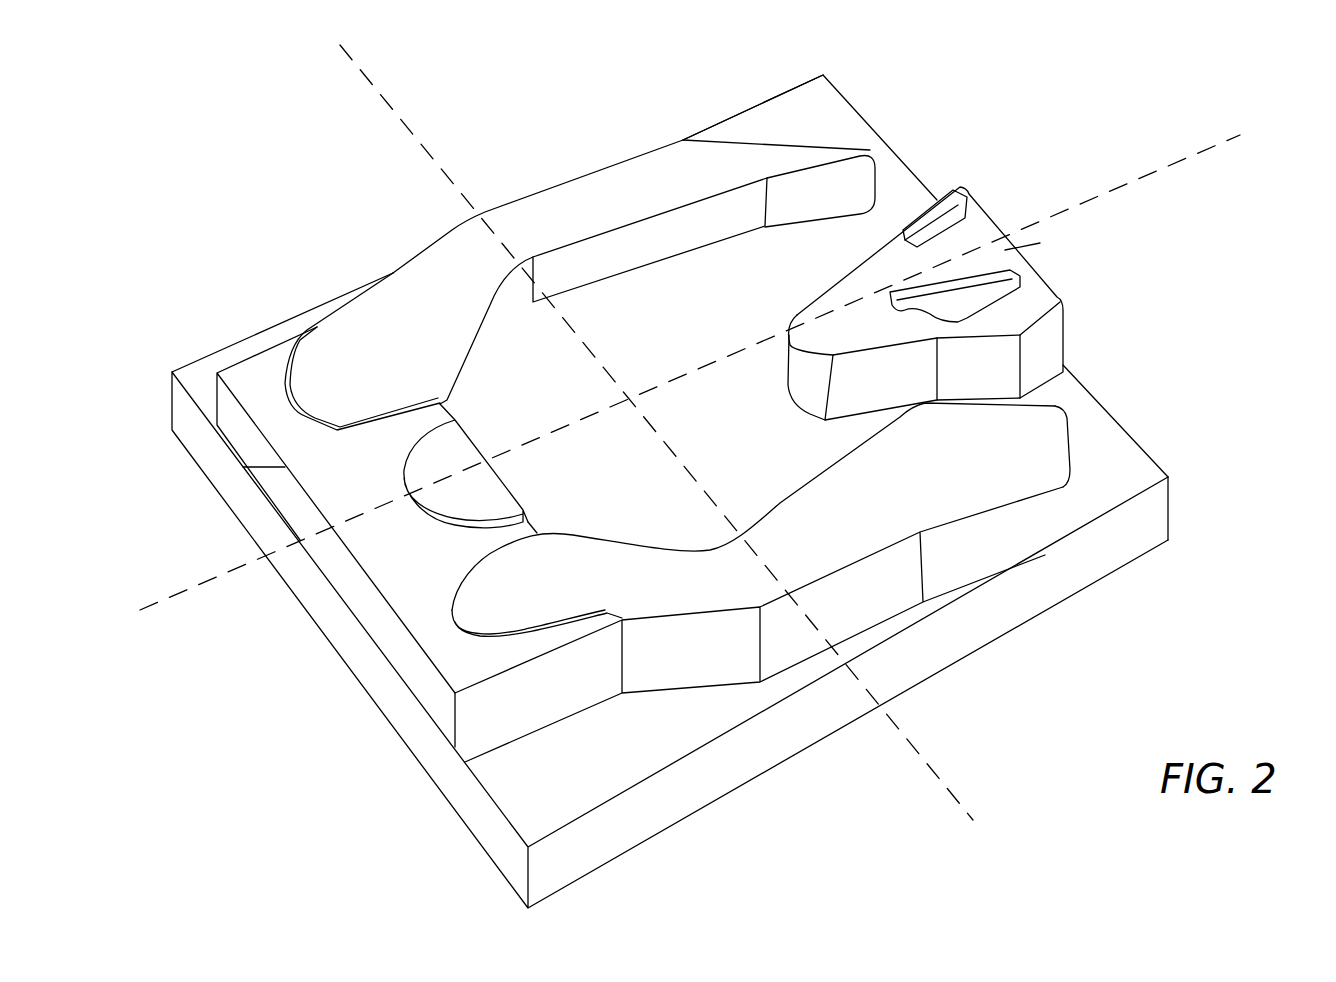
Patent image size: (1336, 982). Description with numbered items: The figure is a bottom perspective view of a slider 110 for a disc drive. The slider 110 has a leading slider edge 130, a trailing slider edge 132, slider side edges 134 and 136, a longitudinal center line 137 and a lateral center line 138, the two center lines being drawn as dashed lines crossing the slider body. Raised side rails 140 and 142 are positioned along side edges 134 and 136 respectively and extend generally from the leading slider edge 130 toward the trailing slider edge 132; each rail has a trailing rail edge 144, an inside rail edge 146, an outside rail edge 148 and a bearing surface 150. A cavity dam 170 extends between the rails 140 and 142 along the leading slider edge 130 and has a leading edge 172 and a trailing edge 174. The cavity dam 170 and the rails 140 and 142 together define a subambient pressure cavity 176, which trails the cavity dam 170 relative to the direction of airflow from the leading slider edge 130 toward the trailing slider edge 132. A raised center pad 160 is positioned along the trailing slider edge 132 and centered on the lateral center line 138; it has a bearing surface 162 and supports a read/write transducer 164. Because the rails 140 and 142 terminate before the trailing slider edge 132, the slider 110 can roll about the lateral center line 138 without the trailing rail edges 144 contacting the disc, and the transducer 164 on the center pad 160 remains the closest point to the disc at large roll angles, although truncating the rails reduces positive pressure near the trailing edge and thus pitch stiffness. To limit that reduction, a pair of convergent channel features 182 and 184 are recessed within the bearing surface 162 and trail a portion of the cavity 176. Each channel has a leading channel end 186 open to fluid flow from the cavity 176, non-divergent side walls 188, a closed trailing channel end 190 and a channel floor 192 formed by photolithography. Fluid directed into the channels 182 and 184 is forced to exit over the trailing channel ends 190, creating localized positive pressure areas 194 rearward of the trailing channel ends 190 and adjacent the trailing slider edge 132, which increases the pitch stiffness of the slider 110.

The slider 110 is at (313, 150).
The leading slider edge 130 is at (482, 818).
The trailing slider edge 132 is at (1140, 437).
The slider side edge 134 is at (1135, 530).
The slider side edge 136 is at (715, 122).
The longitudinal center line 137 is at (972, 820).
The lateral center line 138 is at (1218, 157).
The raised side rail 140 is at (966, 474).
The raised side rail 142 is at (672, 175).
The trailing rail edge 144 is at (872, 150).
The inside rail edge 146 is at (610, 263).
The outside rail edge 148 is at (466, 218).
The bearing surface 150 is at (553, 203).
The raised center pad 160 is at (853, 291).
The bearing surface 162 is at (1040, 243).
The read/write transducer 164 is at (1017, 208).
The cavity dam 170 is at (402, 576).
The leading edge 172 is at (243, 467).
The trailing edge 174 is at (537, 533).
The subambient pressure cavity 176 is at (588, 392).
The convergent channel feature 182 is at (920, 325).
The convergent channel feature 184 is at (900, 258).
The leading channel end 186 is at (946, 322).
The non-divergent side walls 188 is at (938, 205).
The trailing channel end 190 is at (982, 220).
The channel floor 192 is at (920, 240).
The localized positive pressure area 194 is at (975, 212).